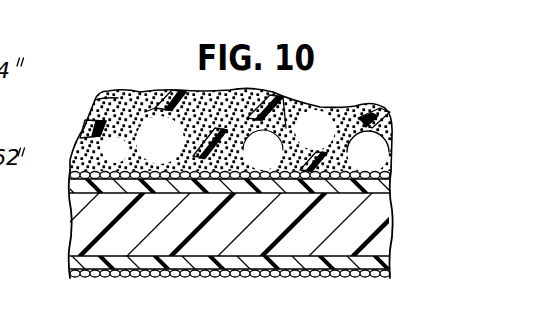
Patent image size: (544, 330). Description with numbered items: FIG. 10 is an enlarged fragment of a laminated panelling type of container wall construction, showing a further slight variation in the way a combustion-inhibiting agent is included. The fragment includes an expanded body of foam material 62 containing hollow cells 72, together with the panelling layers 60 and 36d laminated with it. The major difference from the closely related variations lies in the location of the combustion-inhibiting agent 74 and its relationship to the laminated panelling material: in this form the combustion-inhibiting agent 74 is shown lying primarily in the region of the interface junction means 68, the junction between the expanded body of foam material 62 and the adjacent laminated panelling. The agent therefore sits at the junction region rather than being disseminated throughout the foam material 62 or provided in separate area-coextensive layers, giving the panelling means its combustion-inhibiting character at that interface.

The substrate layer 60 is at (458, 210).
The expanded body of foam material 62 is at (344, 101).
The interface junction means 68 is at (466, 162).
The hollow cells 72 is at (163, 92).
The combustion-inhibiting agent 74 is at (85, 142).
The fibrous material 36d is at (120, 58).